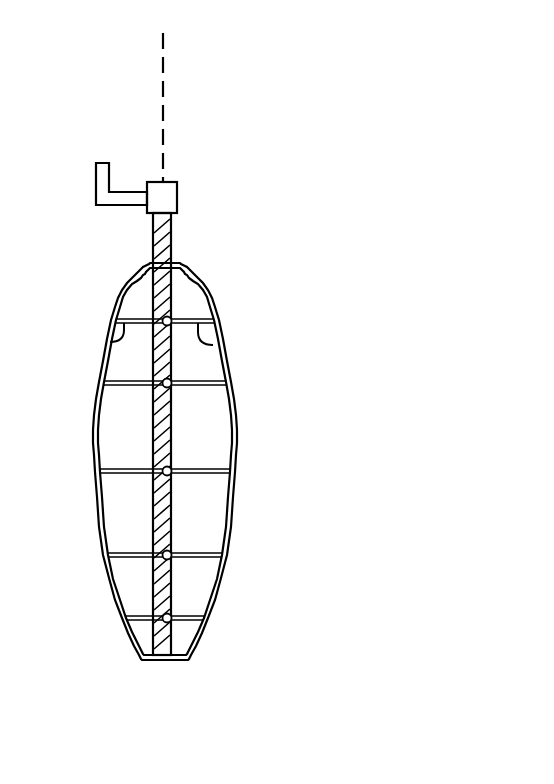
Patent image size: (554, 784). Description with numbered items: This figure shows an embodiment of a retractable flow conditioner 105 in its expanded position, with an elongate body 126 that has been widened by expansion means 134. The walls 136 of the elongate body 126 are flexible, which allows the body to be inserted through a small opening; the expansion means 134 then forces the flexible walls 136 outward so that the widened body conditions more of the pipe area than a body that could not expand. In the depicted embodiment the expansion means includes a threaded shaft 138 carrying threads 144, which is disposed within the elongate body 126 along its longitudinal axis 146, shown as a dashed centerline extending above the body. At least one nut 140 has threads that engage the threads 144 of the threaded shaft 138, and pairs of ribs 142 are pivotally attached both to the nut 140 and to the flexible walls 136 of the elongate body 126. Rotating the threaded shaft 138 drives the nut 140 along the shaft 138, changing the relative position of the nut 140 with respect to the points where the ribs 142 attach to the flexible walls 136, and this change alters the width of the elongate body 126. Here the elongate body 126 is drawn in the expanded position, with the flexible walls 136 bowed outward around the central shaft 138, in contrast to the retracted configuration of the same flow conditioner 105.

The flow conditioner 105 is at (266, 233).
The elongate body 126 is at (248, 448).
The expansion means 134 is at (136, 166).
The flexible walls 136 is at (93, 495).
The threaded shaft 138 is at (141, 234).
The nut 140 is at (172, 316).
The ribs 142 is at (110, 342).
The threads 144 is at (170, 242).
The longitudinal axis 146 is at (163, 92).